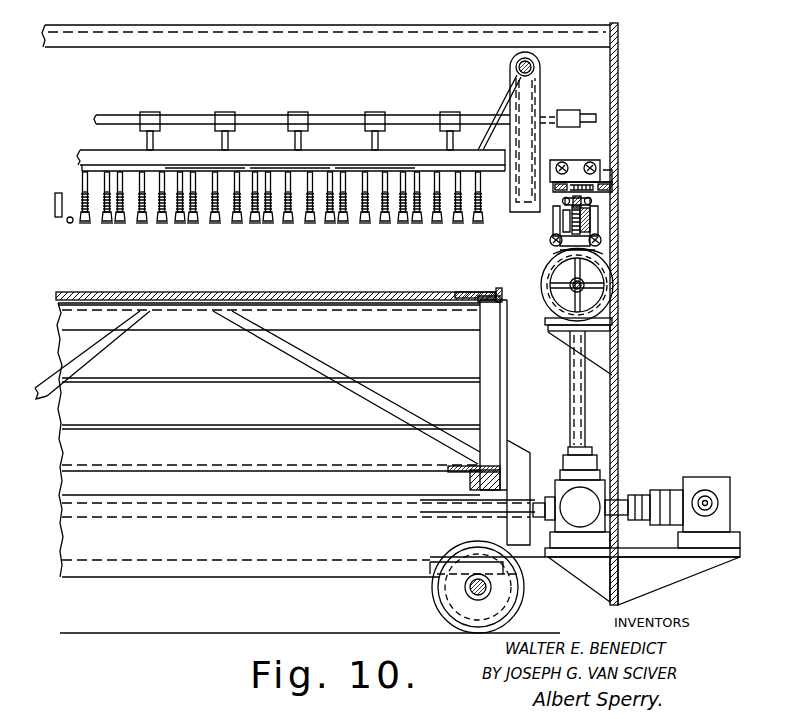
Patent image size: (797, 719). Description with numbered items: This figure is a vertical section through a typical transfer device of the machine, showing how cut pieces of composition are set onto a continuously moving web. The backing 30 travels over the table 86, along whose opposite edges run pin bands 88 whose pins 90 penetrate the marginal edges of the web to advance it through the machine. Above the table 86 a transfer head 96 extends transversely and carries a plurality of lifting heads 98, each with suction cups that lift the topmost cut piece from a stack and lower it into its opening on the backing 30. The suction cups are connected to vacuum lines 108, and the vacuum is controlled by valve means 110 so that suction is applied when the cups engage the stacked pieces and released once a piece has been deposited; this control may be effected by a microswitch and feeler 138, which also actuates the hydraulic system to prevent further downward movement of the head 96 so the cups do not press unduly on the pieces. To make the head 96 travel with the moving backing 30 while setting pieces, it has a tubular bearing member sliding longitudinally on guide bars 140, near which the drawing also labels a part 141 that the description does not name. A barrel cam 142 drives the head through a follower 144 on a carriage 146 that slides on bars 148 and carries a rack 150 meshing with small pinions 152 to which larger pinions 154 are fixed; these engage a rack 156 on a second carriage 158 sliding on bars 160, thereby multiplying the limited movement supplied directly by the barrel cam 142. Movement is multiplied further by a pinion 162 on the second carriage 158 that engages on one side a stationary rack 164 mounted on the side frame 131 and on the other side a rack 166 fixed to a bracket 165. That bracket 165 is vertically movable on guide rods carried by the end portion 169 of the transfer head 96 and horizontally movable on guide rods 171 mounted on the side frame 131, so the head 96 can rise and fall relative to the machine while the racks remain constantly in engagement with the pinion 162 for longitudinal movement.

The backing 30 is at (108, 292).
The table 86 is at (56, 302).
The pin bands 88 is at (501, 300).
The pins 90 is at (490, 292).
The transfer head 96 is at (312, 152).
The lifting heads 98 is at (308, 226).
The vacuum lines 108 is at (321, 114).
The valve means 110 is at (562, 110).
The side frame 131 is at (619, 66).
The microswitch and feeler 138 is at (57, 196).
The guide bars 140 is at (513, 67).
The pulley bracket 141 is at (540, 70).
The barrel cam 142 is at (613, 283).
The follower 144 is at (603, 250).
The carriage 146 is at (562, 268).
The bars 148 is at (600, 238).
The rack 150 is at (592, 222).
The small pinions 152 is at (582, 210).
The larger pinions 154 is at (551, 240).
The rack 156 is at (556, 216).
The second carriage 158 is at (592, 196).
The bars 160 is at (570, 201).
The pinion 162 is at (589, 162).
The stationary rack 164 is at (600, 178).
The bracket 165 is at (567, 163).
The rack 166 is at (562, 161).
The end portion 169 is at (510, 105).
The guide rods 171 is at (619, 140).